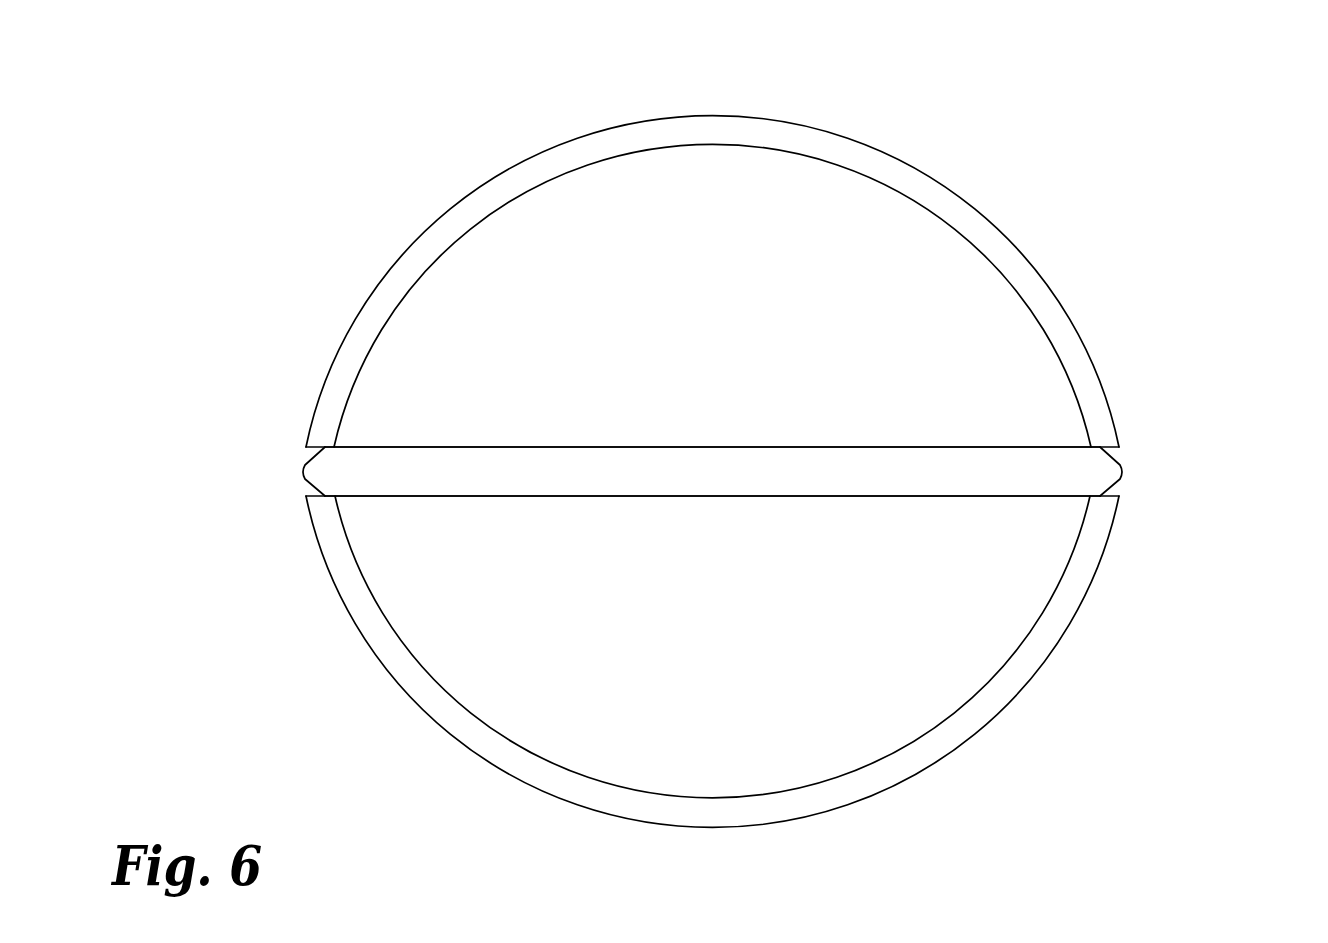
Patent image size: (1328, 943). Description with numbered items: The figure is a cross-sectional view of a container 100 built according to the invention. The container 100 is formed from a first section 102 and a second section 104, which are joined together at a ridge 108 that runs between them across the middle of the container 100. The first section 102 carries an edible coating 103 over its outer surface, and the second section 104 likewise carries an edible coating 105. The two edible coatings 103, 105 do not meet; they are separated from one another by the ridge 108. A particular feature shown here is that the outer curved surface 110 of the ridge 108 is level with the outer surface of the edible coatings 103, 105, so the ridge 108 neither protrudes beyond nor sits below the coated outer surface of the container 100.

The container 100 is at (1198, 77).
The first section 102 is at (788, 283).
The edible coating 103 is at (1028, 296).
The second section 104 is at (913, 683).
The edible coating 105 is at (1087, 543).
The ridge 108 is at (502, 476).
The outer curved surface 110 is at (1150, 468).